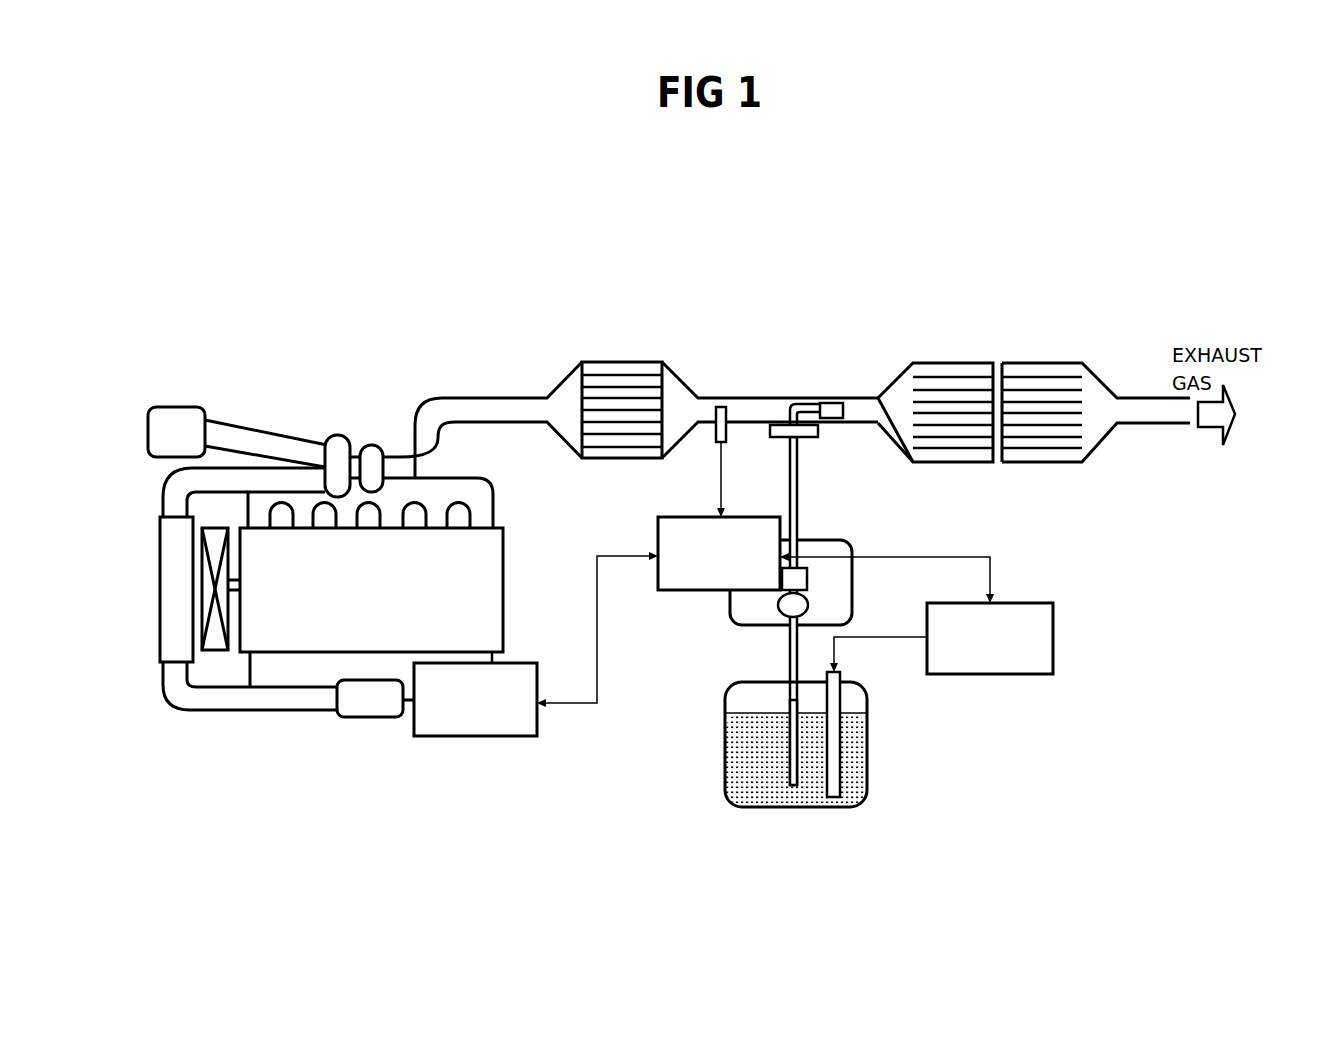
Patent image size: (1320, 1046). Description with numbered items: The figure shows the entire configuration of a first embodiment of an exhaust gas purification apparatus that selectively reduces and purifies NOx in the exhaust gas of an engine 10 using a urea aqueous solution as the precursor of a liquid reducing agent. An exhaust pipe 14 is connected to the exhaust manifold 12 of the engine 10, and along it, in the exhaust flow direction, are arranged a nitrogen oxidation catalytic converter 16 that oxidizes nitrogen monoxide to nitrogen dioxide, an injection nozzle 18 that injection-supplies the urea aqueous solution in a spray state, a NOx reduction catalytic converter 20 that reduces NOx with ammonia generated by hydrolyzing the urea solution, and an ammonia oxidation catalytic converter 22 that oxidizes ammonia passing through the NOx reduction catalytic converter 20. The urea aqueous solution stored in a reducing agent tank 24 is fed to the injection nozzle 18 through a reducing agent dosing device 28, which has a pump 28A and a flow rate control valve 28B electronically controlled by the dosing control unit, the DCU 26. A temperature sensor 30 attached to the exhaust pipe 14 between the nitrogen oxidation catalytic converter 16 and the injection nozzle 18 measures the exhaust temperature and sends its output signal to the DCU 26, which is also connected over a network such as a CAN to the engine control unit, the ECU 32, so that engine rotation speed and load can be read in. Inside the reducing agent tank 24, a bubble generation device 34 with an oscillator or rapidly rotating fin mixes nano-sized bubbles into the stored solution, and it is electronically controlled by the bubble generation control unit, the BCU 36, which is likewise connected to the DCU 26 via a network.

The engine 10 is at (504, 570).
The exhaust manifold 12 is at (480, 483).
The exhaust pipe 14 is at (483, 396).
The nitrogen oxidation catalytic converter 16 is at (615, 372).
The injection nozzle 18 is at (813, 408).
The NOx reduction catalytic converter 20 is at (945, 373).
The ammonia oxidation catalytic converter 22 is at (1030, 373).
The reducing agent tank 24 is at (733, 682).
The reducing agent dosing control unit (DCU) 26 is at (673, 516).
The reducing agent dosing device 28 is at (843, 537).
The pump 28A is at (807, 606).
The flow rate control valve 28B is at (807, 580).
The temperature sensor 30 is at (725, 408).
The engine control unit (ECU) 32 is at (537, 663).
The bubble generation device 34 is at (835, 768).
The bubble generation control unit (BCU) 36 is at (1028, 602).